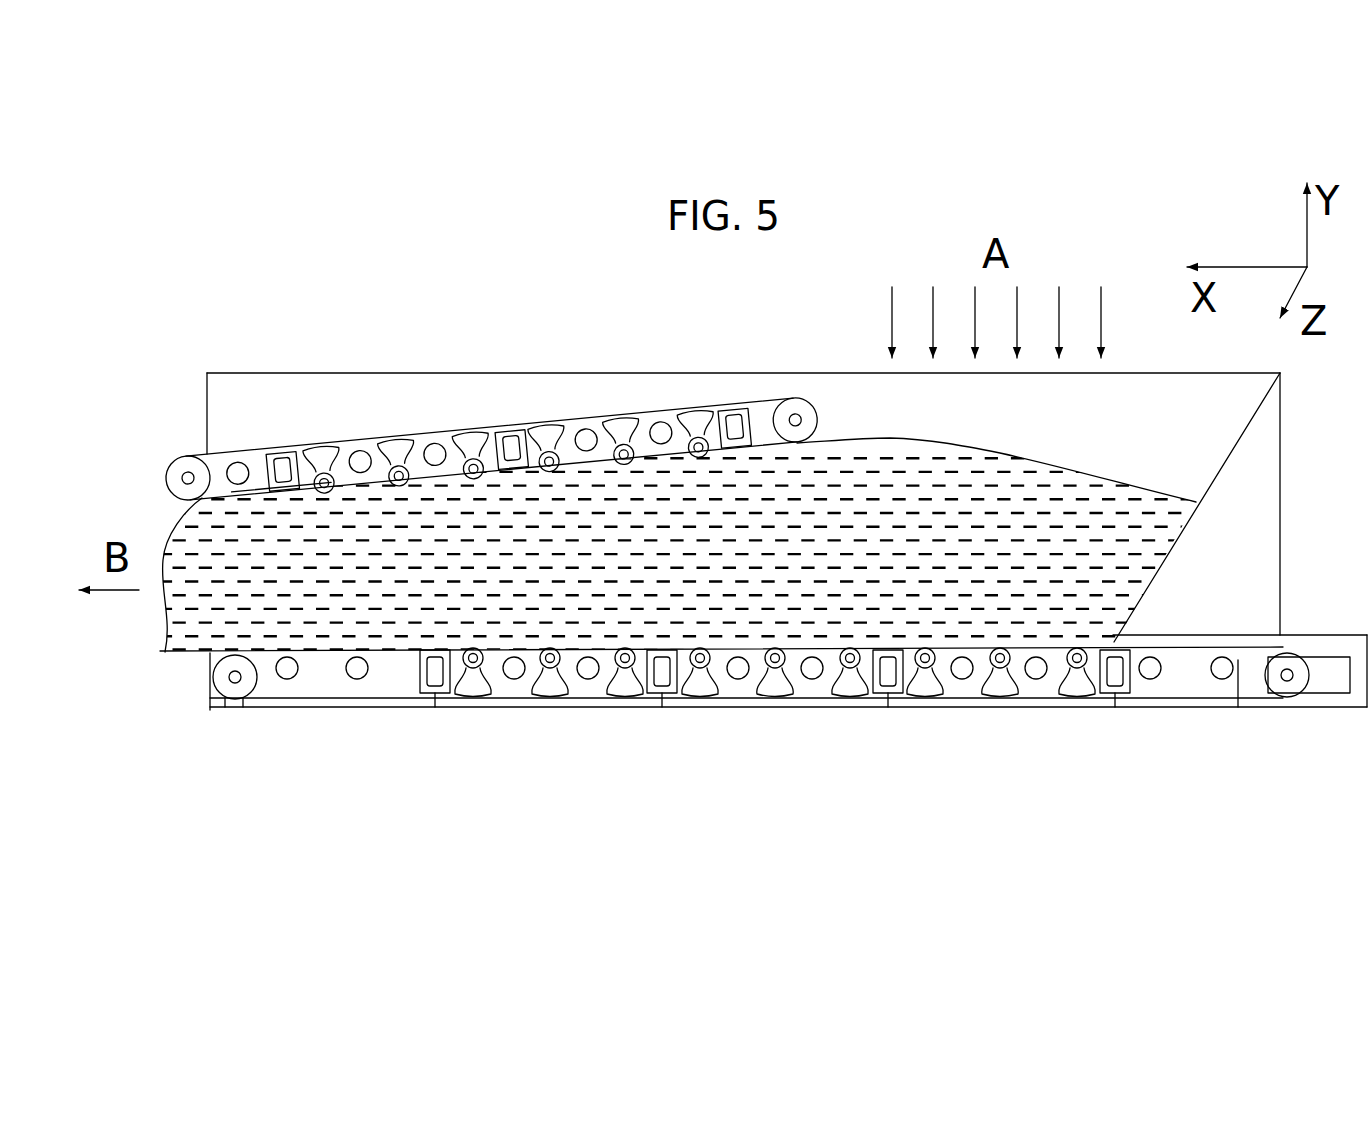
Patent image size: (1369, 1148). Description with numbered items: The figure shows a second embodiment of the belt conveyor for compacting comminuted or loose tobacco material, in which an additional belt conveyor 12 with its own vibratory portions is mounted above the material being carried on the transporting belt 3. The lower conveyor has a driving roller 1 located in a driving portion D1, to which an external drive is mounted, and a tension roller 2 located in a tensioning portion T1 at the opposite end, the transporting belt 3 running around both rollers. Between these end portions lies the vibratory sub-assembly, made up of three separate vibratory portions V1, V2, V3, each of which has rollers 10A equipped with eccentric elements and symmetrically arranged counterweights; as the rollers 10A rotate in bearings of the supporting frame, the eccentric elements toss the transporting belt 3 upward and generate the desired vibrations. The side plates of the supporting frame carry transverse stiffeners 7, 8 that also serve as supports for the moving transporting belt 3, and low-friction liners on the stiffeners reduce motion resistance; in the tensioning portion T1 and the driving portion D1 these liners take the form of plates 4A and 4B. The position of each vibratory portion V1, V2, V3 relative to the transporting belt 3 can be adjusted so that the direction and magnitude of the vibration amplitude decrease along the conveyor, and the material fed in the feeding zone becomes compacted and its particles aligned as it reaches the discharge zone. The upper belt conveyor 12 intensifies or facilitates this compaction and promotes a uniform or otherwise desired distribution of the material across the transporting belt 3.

The driving roller 1 is at (224, 700).
The tension roller 2 is at (1303, 698).
The transporting belt 3 is at (273, 700).
The plate 4A is at (1168, 662).
The plate 4B is at (400, 657).
The transverse stiffener 7 is at (660, 663).
The transverse stiffener 8 is at (738, 670).
The roller 10A is at (1080, 657).
The additional belt conveyor 12 is at (423, 446).
The driving portion D1 is at (322, 677).
The vibratory portion V1 is at (960, 708).
The vibratory portion V2 is at (768, 710).
The vibratory portion V3 is at (551, 705).
The tensioning portion T1 is at (1207, 677).